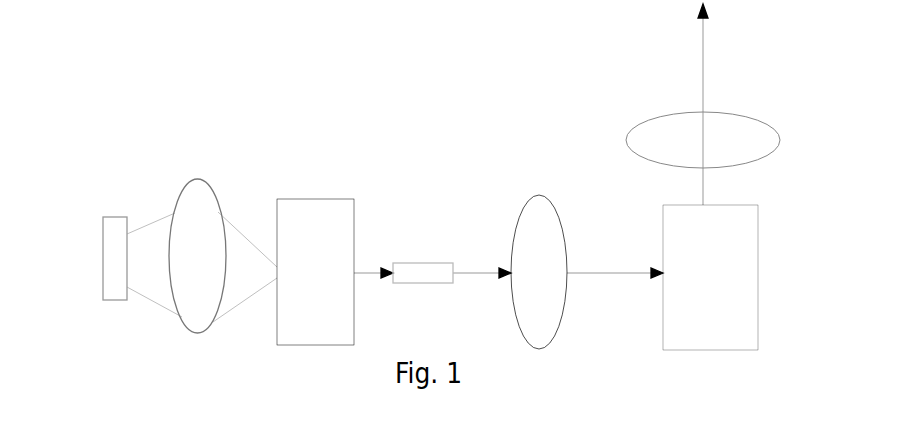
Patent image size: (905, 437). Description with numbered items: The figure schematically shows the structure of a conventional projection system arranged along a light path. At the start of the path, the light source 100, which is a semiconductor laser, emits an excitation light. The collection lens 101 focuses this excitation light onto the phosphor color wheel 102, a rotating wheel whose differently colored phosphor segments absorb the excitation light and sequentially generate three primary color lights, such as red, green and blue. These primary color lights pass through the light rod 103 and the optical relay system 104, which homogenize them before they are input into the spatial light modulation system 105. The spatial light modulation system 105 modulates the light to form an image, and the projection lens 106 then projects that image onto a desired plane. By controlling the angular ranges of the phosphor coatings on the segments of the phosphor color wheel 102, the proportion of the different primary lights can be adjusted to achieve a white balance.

The light source 100 is at (112, 228).
The collection lens 101 is at (202, 192).
The phosphor color wheel 102 is at (320, 203).
The light rod 103 is at (412, 268).
The optical relay system 104 is at (537, 198).
The spatial light modulation system 105 is at (743, 318).
The projection lens 106 is at (643, 138).